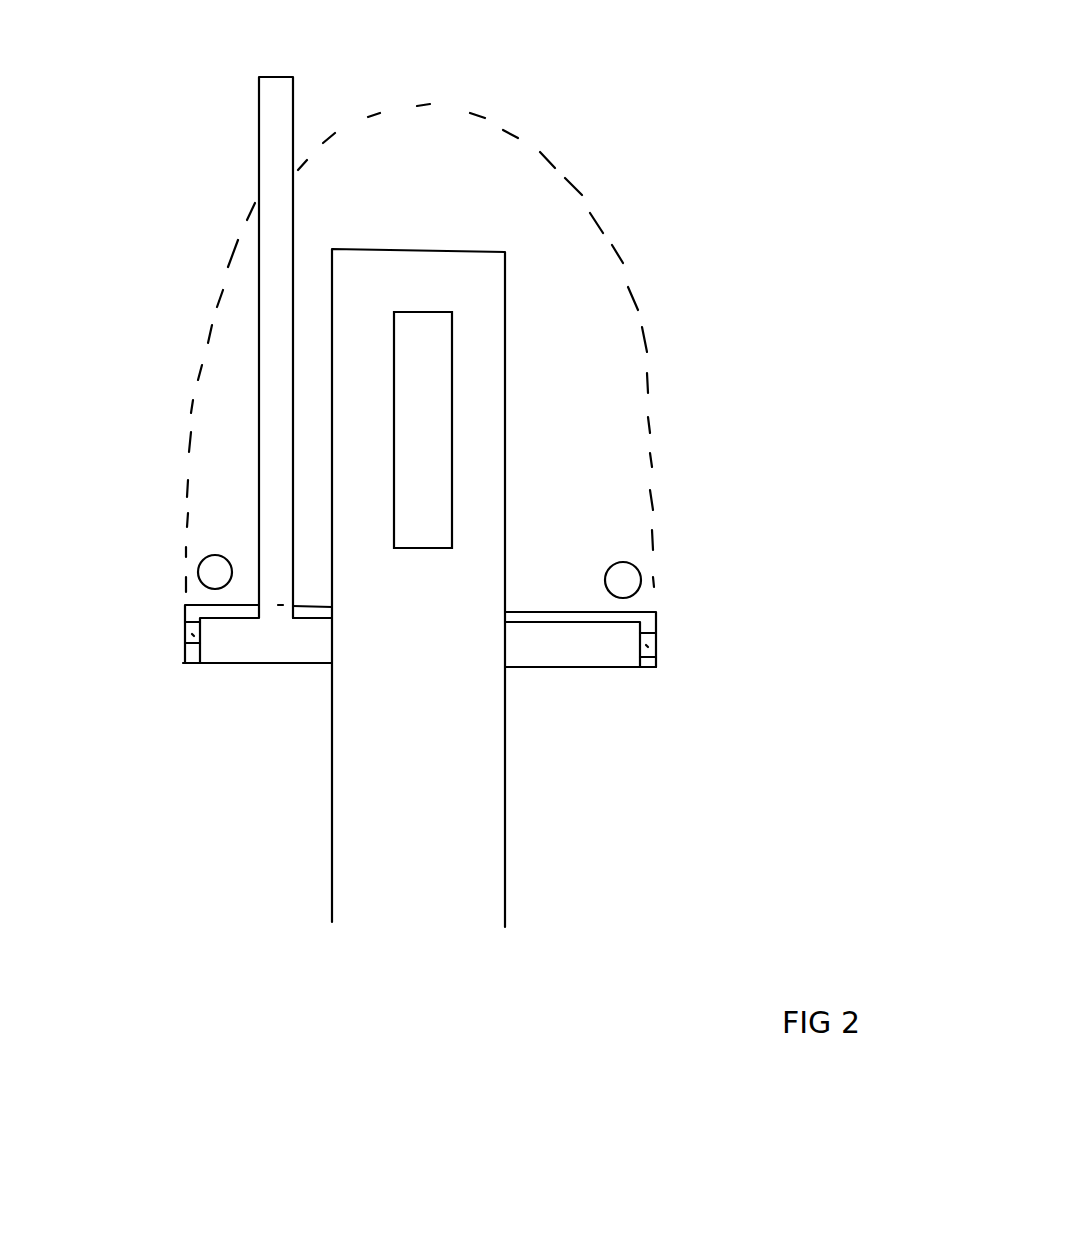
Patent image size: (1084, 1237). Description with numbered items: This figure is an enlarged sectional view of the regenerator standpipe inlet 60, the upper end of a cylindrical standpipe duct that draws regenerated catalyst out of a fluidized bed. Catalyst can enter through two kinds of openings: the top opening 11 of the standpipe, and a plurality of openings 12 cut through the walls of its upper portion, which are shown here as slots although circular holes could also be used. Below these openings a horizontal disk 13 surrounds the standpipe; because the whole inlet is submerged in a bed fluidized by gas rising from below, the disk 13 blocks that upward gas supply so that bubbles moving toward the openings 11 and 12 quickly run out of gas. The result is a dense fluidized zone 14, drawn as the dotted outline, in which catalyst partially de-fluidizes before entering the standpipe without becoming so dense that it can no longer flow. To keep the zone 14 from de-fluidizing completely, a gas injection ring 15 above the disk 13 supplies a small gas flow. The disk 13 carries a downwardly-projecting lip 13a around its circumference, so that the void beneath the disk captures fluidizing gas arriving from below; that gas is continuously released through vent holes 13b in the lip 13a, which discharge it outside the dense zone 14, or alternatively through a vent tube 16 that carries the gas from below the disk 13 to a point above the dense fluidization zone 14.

The top opening 11 is at (465, 252).
The openings 12 is at (433, 430).
The horizontal disk 13 is at (575, 612).
The lip 13a is at (268, 663).
The vent holes 13b is at (165, 648).
The dense fluidized zone 14 is at (610, 297).
The gas injection ring 15 is at (233, 560).
The vent tube 16 is at (298, 37).
The standpipe inlet 60 is at (805, 631).